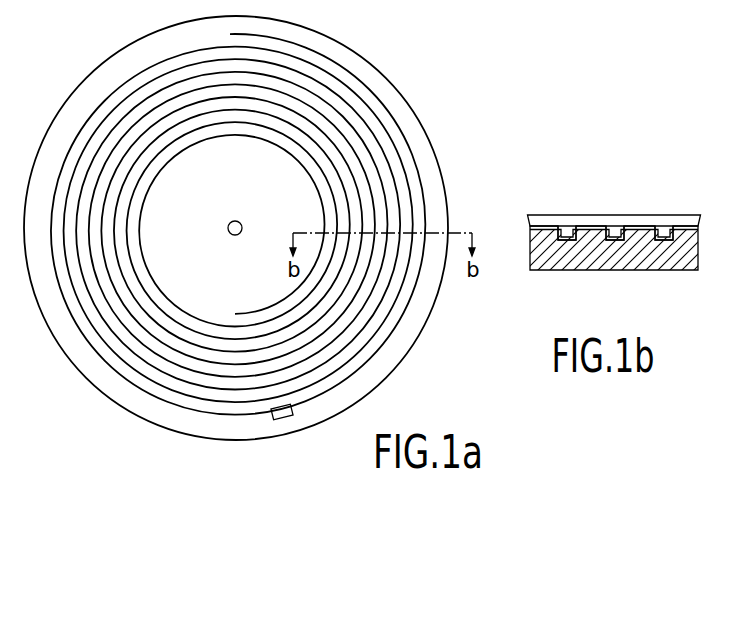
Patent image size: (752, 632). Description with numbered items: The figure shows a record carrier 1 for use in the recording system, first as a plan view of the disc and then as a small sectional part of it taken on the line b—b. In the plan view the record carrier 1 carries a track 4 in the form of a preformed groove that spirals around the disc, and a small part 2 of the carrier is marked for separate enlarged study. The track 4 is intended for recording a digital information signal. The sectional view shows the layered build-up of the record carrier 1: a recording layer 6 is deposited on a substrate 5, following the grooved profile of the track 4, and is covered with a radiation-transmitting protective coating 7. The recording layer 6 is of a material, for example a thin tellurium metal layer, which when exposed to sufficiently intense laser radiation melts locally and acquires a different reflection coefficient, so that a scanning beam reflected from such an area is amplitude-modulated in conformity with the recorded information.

In FIG. 1a, the record carrier 1 is at (236, 249).
In FIG. 1b, the record carrier 1 is at (526, 183).
In FIG. 1a, the part of the record carrier 2 is at (286, 421).
In FIG. 1a, the track 4 is at (100, 362).
In FIG. 1b, the track 4 is at (568, 242).
In FIG. 1b, the substrate 5 is at (555, 262).
In FIG. 1b, the recording layer 6 is at (679, 226).
In FIG. 1b, the protective coating 7 is at (612, 226).